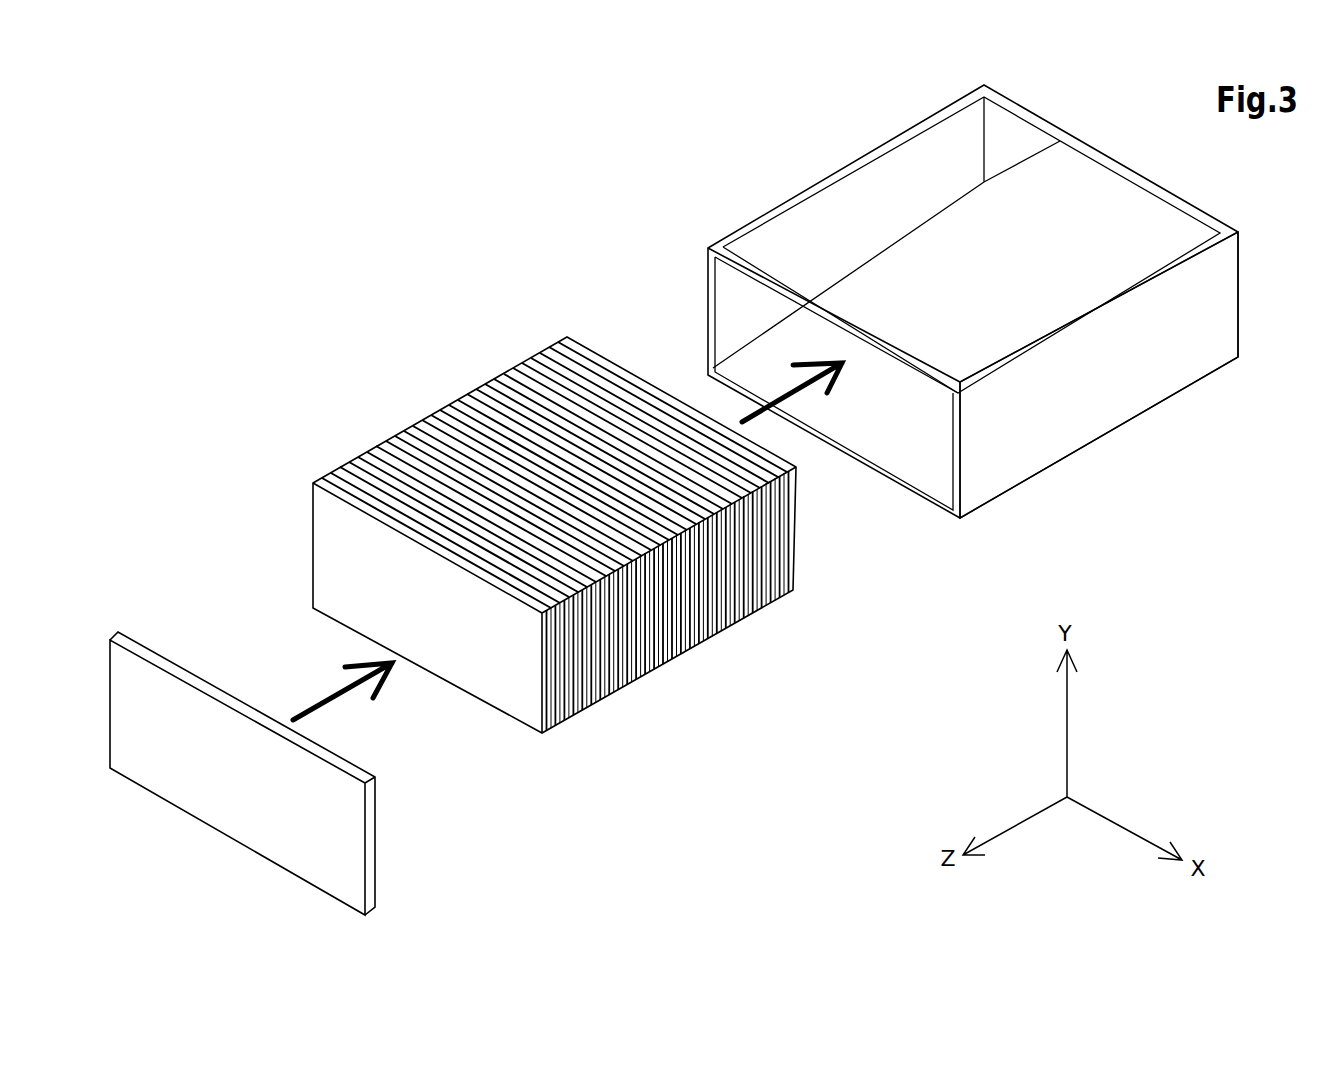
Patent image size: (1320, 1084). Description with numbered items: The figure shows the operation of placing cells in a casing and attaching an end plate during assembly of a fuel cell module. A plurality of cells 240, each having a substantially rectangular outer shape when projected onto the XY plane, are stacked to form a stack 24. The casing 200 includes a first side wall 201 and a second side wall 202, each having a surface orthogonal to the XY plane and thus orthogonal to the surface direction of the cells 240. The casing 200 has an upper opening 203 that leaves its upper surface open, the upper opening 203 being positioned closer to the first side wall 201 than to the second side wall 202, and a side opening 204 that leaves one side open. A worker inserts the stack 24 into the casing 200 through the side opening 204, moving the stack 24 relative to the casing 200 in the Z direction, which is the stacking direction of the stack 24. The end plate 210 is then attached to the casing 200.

The casing 200 is at (973, 304).
The first side wall 201 is at (848, 213).
The second side wall 202 is at (1062, 405).
The upper opening 203 is at (930, 204).
The side opening 204 is at (850, 416).
The end plate 210 is at (200, 792).
The stack 24 is at (558, 530).
The cell 240 is at (413, 437).